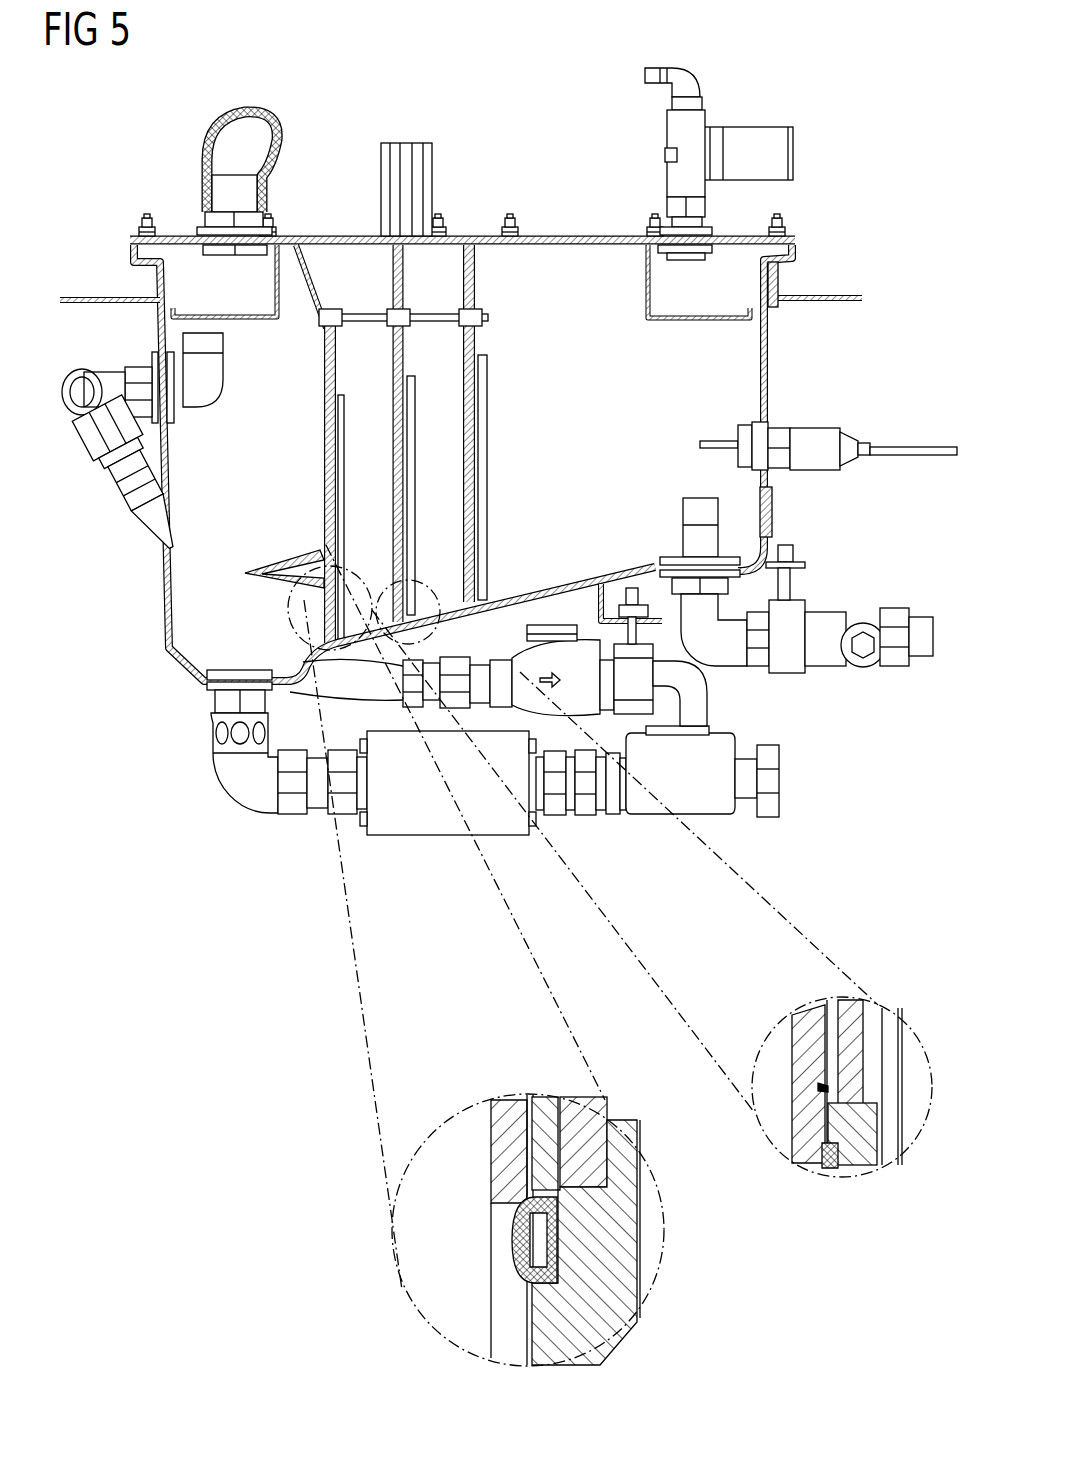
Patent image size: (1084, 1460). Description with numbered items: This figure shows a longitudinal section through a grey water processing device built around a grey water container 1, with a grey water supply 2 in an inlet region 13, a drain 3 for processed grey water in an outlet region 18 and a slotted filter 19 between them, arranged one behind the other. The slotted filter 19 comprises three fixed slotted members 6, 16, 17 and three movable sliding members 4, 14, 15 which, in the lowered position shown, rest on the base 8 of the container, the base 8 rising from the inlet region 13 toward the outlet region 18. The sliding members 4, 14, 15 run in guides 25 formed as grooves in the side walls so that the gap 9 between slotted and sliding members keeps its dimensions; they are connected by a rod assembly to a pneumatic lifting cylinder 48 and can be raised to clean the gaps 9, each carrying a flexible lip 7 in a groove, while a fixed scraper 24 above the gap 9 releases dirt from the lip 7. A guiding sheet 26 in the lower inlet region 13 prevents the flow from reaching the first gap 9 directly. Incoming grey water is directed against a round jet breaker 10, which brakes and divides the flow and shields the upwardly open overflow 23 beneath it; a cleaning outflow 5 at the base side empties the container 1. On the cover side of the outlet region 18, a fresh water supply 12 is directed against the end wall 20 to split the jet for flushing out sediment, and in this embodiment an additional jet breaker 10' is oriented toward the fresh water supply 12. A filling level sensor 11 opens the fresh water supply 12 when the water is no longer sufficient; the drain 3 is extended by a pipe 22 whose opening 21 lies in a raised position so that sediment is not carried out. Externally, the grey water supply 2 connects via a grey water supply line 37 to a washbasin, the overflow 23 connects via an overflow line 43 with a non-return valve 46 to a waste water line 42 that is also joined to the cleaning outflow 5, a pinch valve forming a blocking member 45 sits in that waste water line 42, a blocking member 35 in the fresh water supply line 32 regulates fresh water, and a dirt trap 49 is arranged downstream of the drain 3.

The grey water container 1 is at (540, 236).
The grey water supply 2 is at (186, 205).
The drain 3 is at (735, 590).
The sliding member 4 is at (322, 648).
The cleaning outflow 5 is at (223, 792).
The slotted member 6 is at (299, 245).
The flexible lip 7 is at (555, 1250).
The base 8 is at (599, 580).
The gap 9 is at (535, 1130).
The jet breaker 10 is at (169, 463).
The additional jet breaker 10' is at (590, 290).
The filling level sensor 11 is at (819, 436).
The fresh water supply 12 is at (654, 205).
The inlet region 13 is at (233, 496).
The sliding member 14 is at (416, 628).
The sliding member 15 is at (486, 602).
The slotted member 16 is at (388, 262).
The slotted member 17 is at (470, 245).
The outlet region 18 is at (635, 383).
The slotted filter 19 is at (510, 385).
The end wall 20 is at (770, 323).
The opening 21 is at (700, 498).
The pipe 22 is at (690, 512).
The overflow 23 is at (165, 345).
The scraper 24 is at (820, 1087).
The guides 25 is at (648, 1290).
The guiding sheet 26 is at (264, 571).
The fresh water supply line 32 is at (680, 76).
The blocking member 35 is at (698, 148).
The grey water supply line 37 is at (250, 112).
The waste water line 42 is at (760, 802).
The overflow line 43 is at (352, 693).
The blocking member 45 is at (425, 822).
The non-return valve 46 is at (560, 700).
The lifting cylinder 48 is at (405, 143).
The dirt trap 49 is at (873, 664).